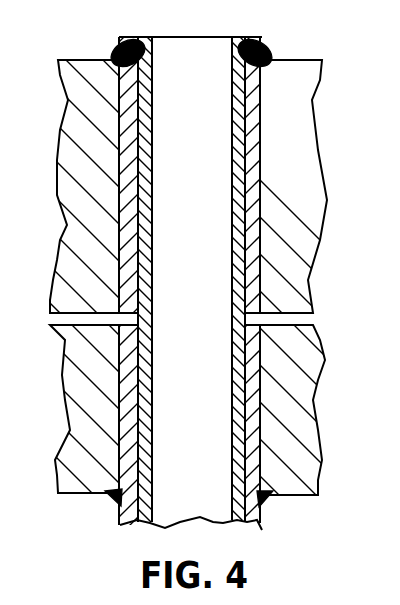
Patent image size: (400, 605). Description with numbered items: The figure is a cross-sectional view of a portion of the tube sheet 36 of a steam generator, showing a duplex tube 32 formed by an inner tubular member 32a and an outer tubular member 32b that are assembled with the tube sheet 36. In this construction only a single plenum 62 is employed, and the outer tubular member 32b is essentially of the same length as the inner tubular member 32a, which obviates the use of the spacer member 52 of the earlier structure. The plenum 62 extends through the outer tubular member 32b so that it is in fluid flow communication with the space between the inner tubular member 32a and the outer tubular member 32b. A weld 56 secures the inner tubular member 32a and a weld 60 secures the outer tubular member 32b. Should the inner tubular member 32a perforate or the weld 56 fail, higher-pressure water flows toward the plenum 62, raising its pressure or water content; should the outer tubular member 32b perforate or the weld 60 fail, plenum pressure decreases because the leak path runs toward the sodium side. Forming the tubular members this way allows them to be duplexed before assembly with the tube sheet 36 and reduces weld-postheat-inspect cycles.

The duplex tube 32 is at (266, 529).
The inner tubular member 32a is at (232, 440).
The outer tubular member 32b is at (255, 433).
The tube sheet 36 is at (317, 150).
The spacer member 52 is at (128, 123).
The weld 56 is at (258, 45).
The weld 60 is at (117, 500).
The plenum 62 is at (60, 317).